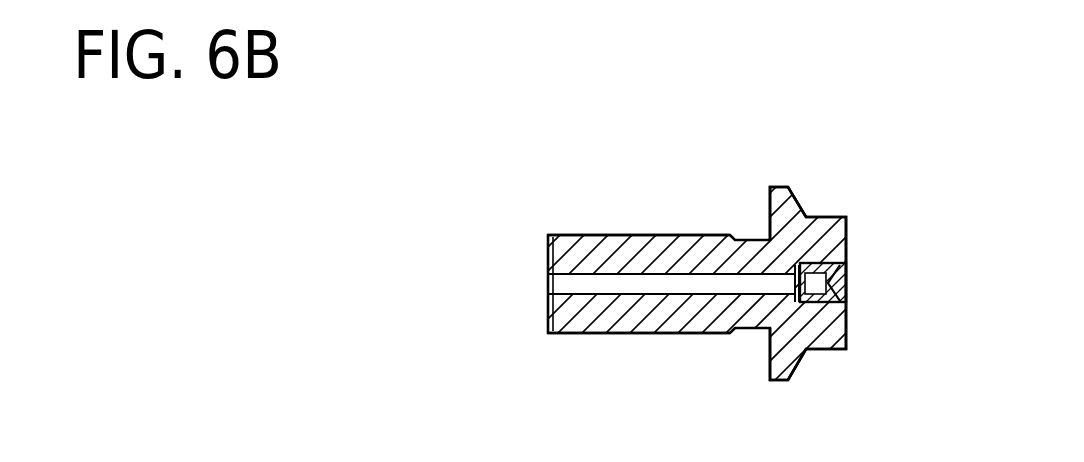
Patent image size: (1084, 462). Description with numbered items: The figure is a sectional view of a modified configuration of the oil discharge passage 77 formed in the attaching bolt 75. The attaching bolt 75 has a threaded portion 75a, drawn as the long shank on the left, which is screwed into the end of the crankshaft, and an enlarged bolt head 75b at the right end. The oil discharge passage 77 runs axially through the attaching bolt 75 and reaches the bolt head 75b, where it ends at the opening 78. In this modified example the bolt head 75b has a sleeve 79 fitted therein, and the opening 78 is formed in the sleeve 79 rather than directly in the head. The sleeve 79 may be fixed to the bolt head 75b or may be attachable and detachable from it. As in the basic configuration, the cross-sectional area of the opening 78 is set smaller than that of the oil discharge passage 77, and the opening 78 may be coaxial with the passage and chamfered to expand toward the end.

The attaching bolt 75 is at (791, 162).
The threaded portion 75a is at (630, 234).
The bolt head 75b is at (827, 225).
The oil discharge passage 77 is at (578, 285).
The opening 78 is at (847, 280).
The sleeve 79 is at (852, 267).